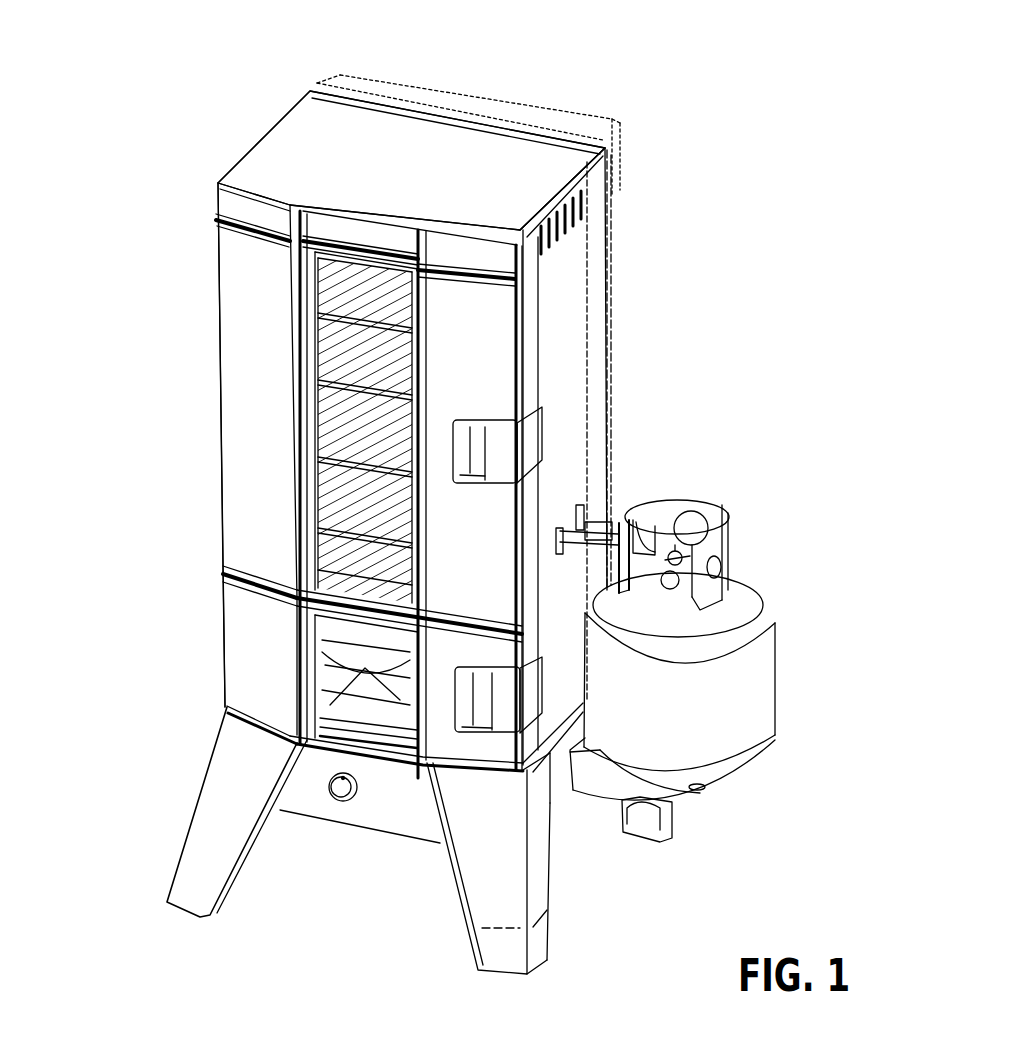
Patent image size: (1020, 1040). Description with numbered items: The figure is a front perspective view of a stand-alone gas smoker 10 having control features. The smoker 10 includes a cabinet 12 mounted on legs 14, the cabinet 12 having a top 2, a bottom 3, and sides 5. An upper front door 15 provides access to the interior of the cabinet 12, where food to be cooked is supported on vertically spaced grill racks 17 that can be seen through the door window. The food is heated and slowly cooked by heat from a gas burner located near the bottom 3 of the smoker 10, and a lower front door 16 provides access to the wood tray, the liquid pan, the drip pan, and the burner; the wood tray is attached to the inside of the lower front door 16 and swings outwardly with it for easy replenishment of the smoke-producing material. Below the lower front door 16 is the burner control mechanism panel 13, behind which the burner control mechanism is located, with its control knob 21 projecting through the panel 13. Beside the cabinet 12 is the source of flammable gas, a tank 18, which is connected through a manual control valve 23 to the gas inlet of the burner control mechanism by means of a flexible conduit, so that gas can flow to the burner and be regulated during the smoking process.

The stand-alone gas smoker 10 is at (676, 128).
The top 2 is at (428, 160).
The grill racks 17 is at (292, 260).
The upper front door 15 is at (255, 344).
The lower front door 16 is at (263, 675).
The bottom 3 is at (227, 706).
The sides 5 is at (567, 443).
The cabinet 12 is at (608, 343).
The burner control mechanism panel 13 is at (392, 803).
The control knob 21 is at (337, 790).
The legs 14 is at (195, 818).
The source (tank) of flammable gas 18 is at (773, 663).
The manual control valve 23 is at (687, 540).